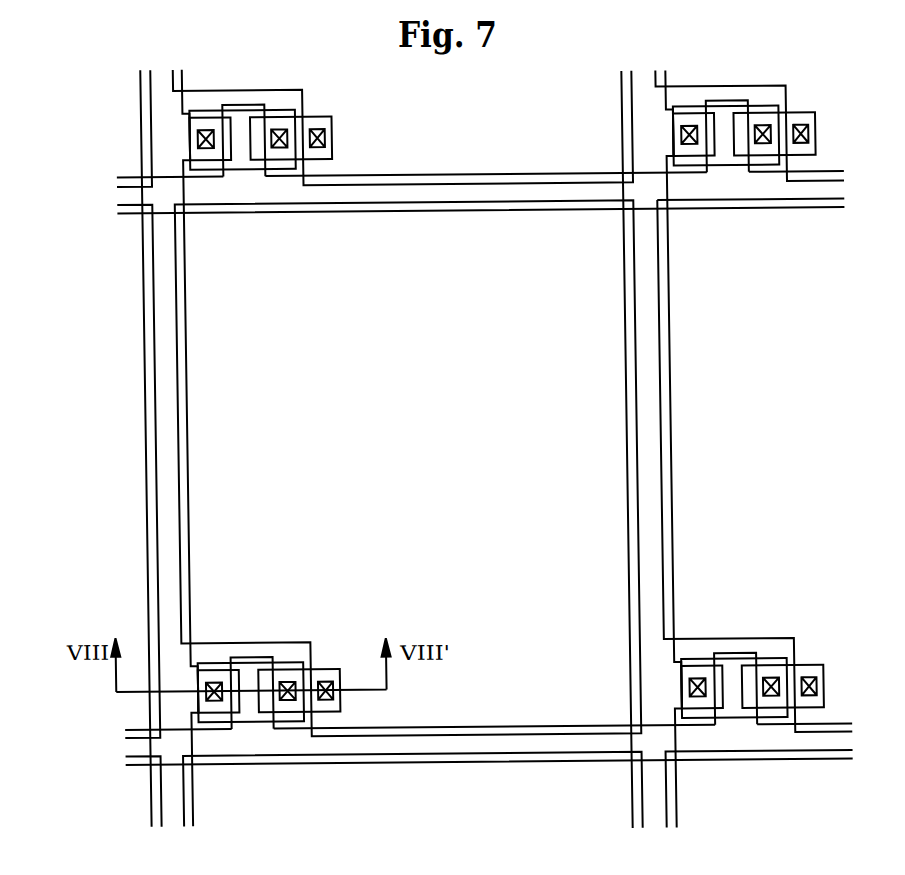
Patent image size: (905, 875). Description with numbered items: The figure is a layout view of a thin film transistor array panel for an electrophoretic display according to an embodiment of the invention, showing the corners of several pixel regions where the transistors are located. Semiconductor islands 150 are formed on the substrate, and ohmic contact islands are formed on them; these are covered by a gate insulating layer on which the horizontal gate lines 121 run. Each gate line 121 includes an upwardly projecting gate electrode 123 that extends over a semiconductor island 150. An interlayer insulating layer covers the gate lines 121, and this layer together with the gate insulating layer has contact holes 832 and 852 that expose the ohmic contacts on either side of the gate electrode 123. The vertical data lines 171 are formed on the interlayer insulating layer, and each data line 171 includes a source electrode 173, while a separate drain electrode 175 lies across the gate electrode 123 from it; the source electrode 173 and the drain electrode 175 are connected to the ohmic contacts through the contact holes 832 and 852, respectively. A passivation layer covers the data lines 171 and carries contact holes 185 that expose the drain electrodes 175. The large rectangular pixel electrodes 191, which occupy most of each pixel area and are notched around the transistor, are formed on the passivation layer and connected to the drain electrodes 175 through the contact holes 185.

The gate line 121 is at (480, 727).
The gate electrode 123 is at (248, 656).
The semiconductor island 150 is at (252, 720).
The data line 171 is at (188, 476).
The source electrode 173 is at (194, 694).
The drain electrode 175 is at (325, 667).
The contact hole 185 is at (330, 691).
The pixel electrode 191 is at (178, 509).
The contact hole 832 is at (210, 698).
The contact hole 852 is at (285, 698).